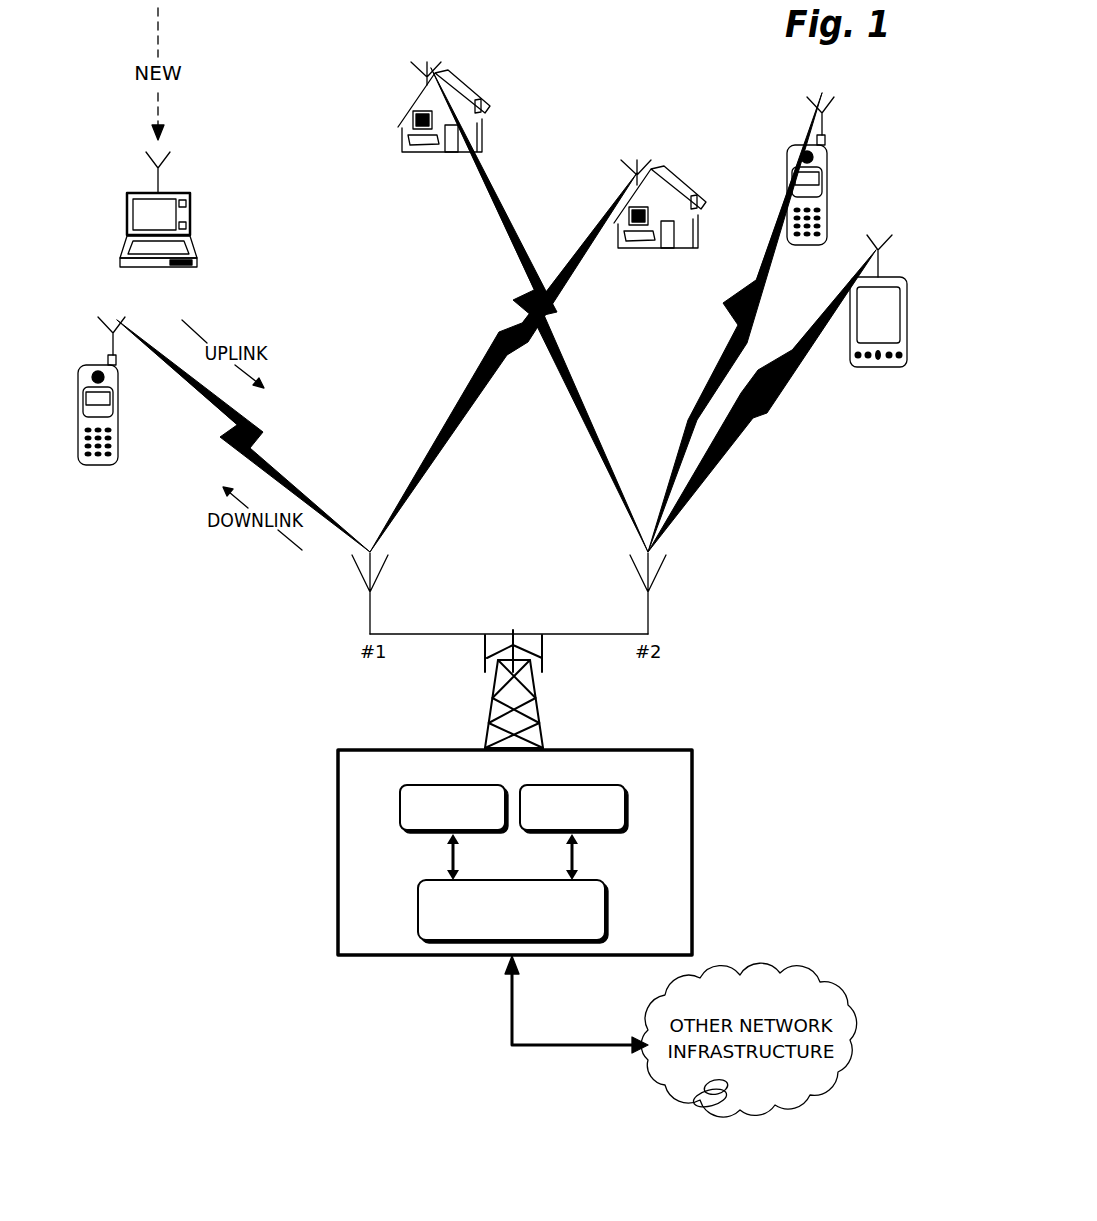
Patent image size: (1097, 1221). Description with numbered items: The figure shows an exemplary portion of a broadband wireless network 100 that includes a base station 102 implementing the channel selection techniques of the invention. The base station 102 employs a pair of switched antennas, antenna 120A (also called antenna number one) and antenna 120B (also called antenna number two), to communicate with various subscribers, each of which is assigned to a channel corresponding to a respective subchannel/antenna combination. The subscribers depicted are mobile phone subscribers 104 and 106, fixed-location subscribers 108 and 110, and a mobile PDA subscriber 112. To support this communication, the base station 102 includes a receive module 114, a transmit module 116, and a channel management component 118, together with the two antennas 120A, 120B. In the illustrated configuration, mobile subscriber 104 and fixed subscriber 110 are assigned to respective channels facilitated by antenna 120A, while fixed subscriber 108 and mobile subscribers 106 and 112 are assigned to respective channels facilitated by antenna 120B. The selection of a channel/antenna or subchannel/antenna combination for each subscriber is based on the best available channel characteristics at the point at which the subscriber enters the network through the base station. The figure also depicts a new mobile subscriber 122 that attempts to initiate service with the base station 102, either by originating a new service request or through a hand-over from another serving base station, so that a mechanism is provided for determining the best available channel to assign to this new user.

The broadband wireless network 100 is at (200, 1047).
The base station 102 is at (678, 877).
The mobile (phone) subscriber 104 is at (113, 423).
The mobile (phone) subscriber 106 is at (823, 179).
The fixed (location) subscriber 108 is at (470, 88).
The fixed (location) subscriber 110 is at (670, 186).
The mobile (PDA) subscriber 112 is at (898, 298).
The receive module 114 is at (400, 809).
The transmit module 116 is at (625, 806).
The channel management component 118 is at (605, 908).
The antenna 120A is at (370, 606).
The antenna 120B is at (648, 606).
The new mobile subscriber 122 is at (138, 203).